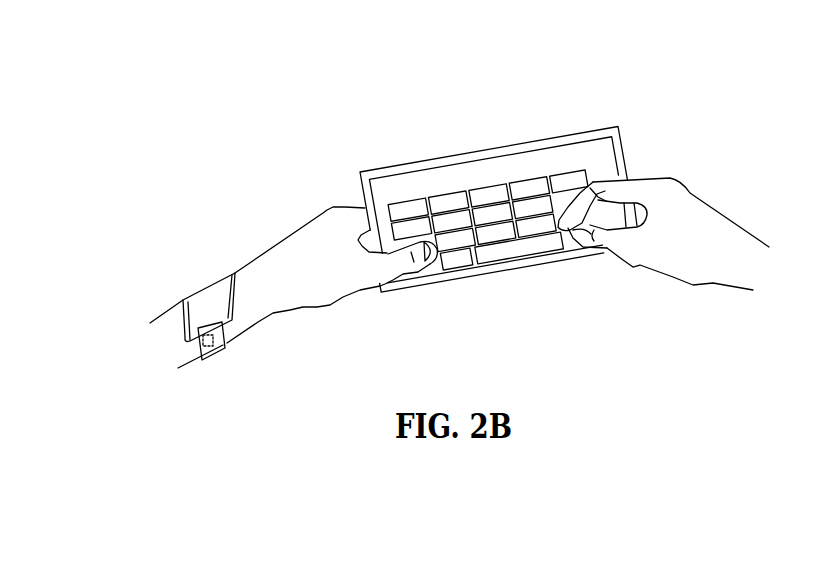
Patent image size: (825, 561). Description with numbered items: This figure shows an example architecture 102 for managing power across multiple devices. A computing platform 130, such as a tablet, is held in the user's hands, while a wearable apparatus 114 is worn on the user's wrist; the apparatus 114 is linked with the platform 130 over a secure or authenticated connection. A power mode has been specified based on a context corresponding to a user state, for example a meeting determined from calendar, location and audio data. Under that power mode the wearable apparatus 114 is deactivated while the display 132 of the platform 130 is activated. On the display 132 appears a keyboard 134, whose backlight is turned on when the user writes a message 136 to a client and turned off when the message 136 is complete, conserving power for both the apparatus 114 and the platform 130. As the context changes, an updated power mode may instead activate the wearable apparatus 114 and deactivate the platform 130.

The architecture 102 is at (171, 62).
The wearable apparatus 114 is at (197, 293).
The computing platform 130 is at (473, 152).
The display 132 is at (556, 146).
The keyboard 134 is at (588, 178).
The message 136 is at (393, 180).